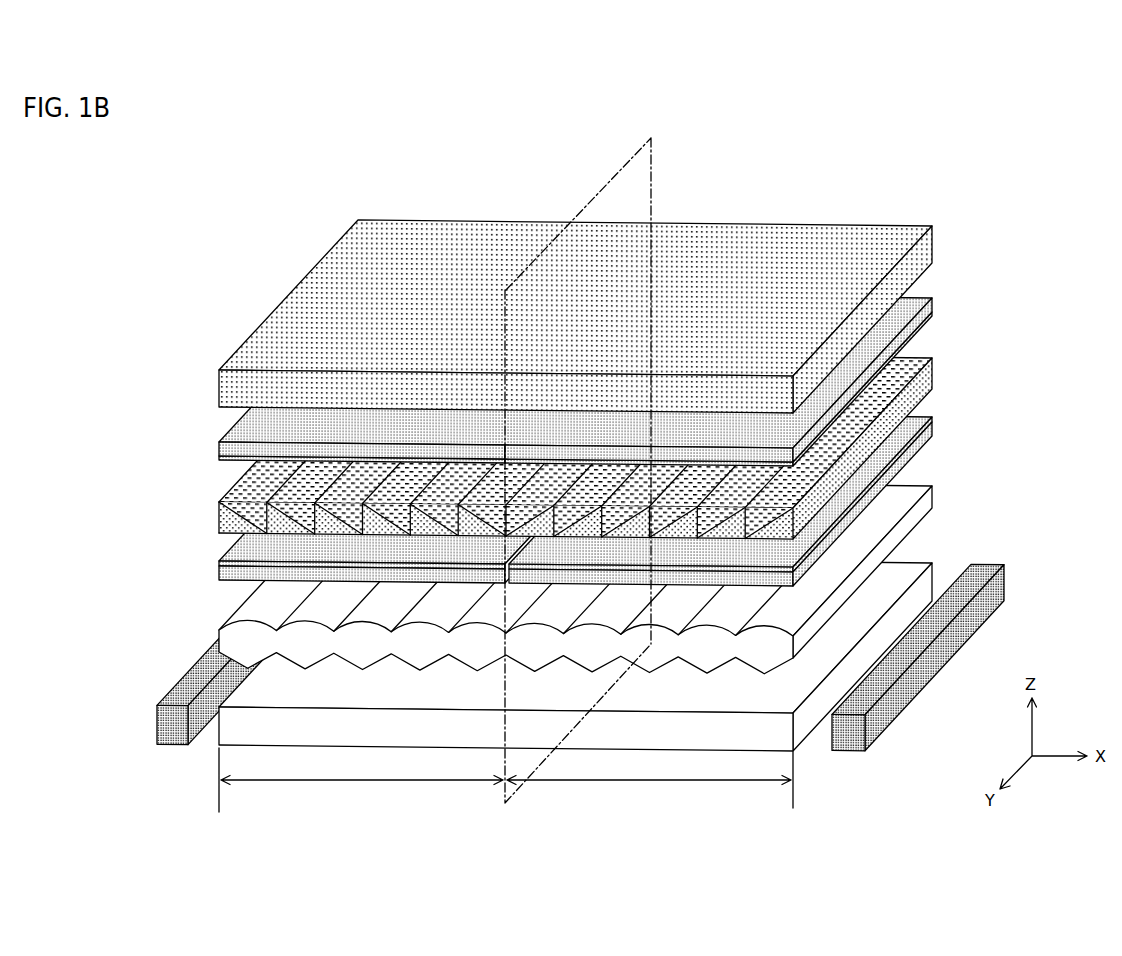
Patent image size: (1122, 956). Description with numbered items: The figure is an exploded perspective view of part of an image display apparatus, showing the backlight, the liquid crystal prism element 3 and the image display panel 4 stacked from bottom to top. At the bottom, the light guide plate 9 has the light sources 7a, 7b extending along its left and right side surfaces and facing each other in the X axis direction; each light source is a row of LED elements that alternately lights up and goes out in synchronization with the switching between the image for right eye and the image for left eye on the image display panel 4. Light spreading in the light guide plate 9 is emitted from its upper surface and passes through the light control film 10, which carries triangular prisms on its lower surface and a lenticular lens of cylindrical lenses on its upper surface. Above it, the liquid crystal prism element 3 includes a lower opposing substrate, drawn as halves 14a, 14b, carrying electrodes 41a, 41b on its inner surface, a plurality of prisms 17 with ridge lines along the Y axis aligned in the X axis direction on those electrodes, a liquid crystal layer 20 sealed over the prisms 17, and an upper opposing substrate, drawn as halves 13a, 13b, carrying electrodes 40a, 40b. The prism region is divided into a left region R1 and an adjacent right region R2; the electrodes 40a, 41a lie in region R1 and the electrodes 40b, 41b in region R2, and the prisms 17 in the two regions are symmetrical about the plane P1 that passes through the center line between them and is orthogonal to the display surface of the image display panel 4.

The image display panel 4 is at (937, 238).
The opposing substrate 13a is at (545, 380).
The opposing substrate 13b is at (751, 371).
The electrode 40a is at (219, 461).
The electrode 40b is at (917, 333).
The liquid crystal prism element 3 is at (574, 440).
The liquid crystal layer 20 is at (226, 495).
The prisms 17 is at (217, 525).
The opposing substrate 14a is at (399, 501).
The opposing substrate 14b is at (754, 489).
The electrode 41a is at (229, 558).
The electrode 41b is at (892, 451).
The light control film 10 is at (575, 576).
The light guide plate 9 is at (575, 653).
The light source 7a is at (242, 650).
The light source 7b is at (850, 745).
The plane P1 is at (656, 150).
The region R1 is at (361, 780).
The region R2 is at (650, 780).